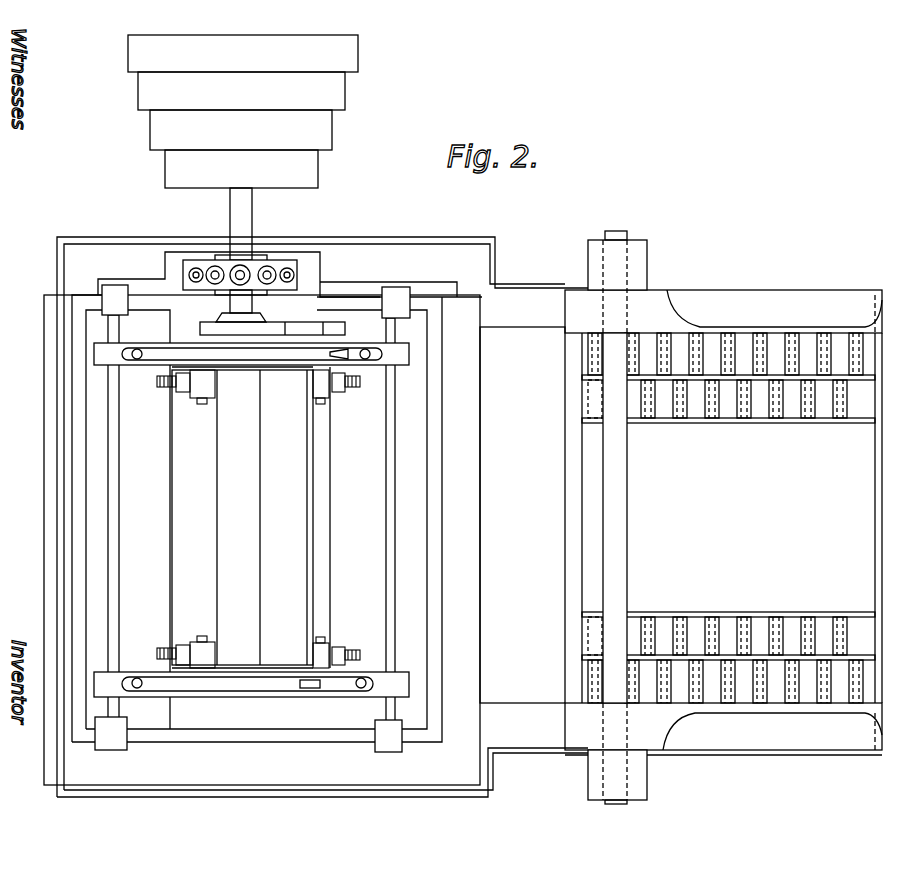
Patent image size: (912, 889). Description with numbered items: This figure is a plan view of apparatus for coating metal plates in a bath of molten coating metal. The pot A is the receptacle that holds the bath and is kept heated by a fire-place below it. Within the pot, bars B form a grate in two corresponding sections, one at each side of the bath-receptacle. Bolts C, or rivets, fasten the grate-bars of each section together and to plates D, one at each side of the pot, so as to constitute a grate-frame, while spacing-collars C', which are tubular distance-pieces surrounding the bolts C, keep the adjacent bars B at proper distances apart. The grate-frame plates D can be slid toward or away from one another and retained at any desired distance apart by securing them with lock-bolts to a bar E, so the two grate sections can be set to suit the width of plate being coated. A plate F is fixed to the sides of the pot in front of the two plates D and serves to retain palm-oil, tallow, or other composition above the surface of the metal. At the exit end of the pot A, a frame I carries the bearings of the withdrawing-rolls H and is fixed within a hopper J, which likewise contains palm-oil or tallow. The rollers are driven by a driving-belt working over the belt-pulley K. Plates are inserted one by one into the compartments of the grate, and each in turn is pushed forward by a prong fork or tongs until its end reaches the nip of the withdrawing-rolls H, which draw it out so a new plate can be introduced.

The pot A is at (263, 518).
The bars B is at (714, 380).
The bolts C is at (725, 531).
The spacing-collars C' is at (722, 519).
The plates D is at (758, 335).
The bar E is at (617, 517).
The plate F is at (522, 515).
The withdrawing-rolls H is at (251, 517).
The frame I is at (251, 520).
The hopper J is at (252, 518).
The belt-pulley K is at (243, 147).